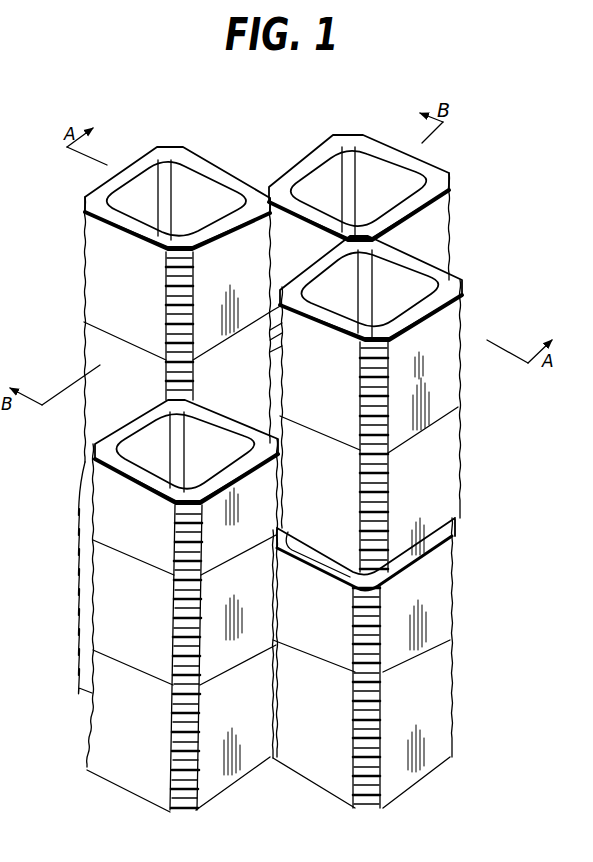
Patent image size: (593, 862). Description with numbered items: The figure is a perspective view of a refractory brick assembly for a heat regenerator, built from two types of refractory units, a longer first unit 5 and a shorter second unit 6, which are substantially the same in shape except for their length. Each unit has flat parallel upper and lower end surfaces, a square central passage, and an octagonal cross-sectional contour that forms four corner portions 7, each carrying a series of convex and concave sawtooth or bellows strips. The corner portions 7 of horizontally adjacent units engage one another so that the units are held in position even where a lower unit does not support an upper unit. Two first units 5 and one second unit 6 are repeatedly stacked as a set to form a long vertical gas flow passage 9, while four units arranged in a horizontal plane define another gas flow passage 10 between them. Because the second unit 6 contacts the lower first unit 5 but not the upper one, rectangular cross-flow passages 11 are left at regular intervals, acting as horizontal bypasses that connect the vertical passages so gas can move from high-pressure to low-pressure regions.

The first refractory unit 5 is at (93, 345).
The second refractory unit 6 is at (266, 365).
The corner portion 7 is at (190, 780).
The vertical gas flow passage 9 is at (357, 238).
The gas flow passage 10 is at (258, 225).
The cross-flow passage 11 is at (278, 313).